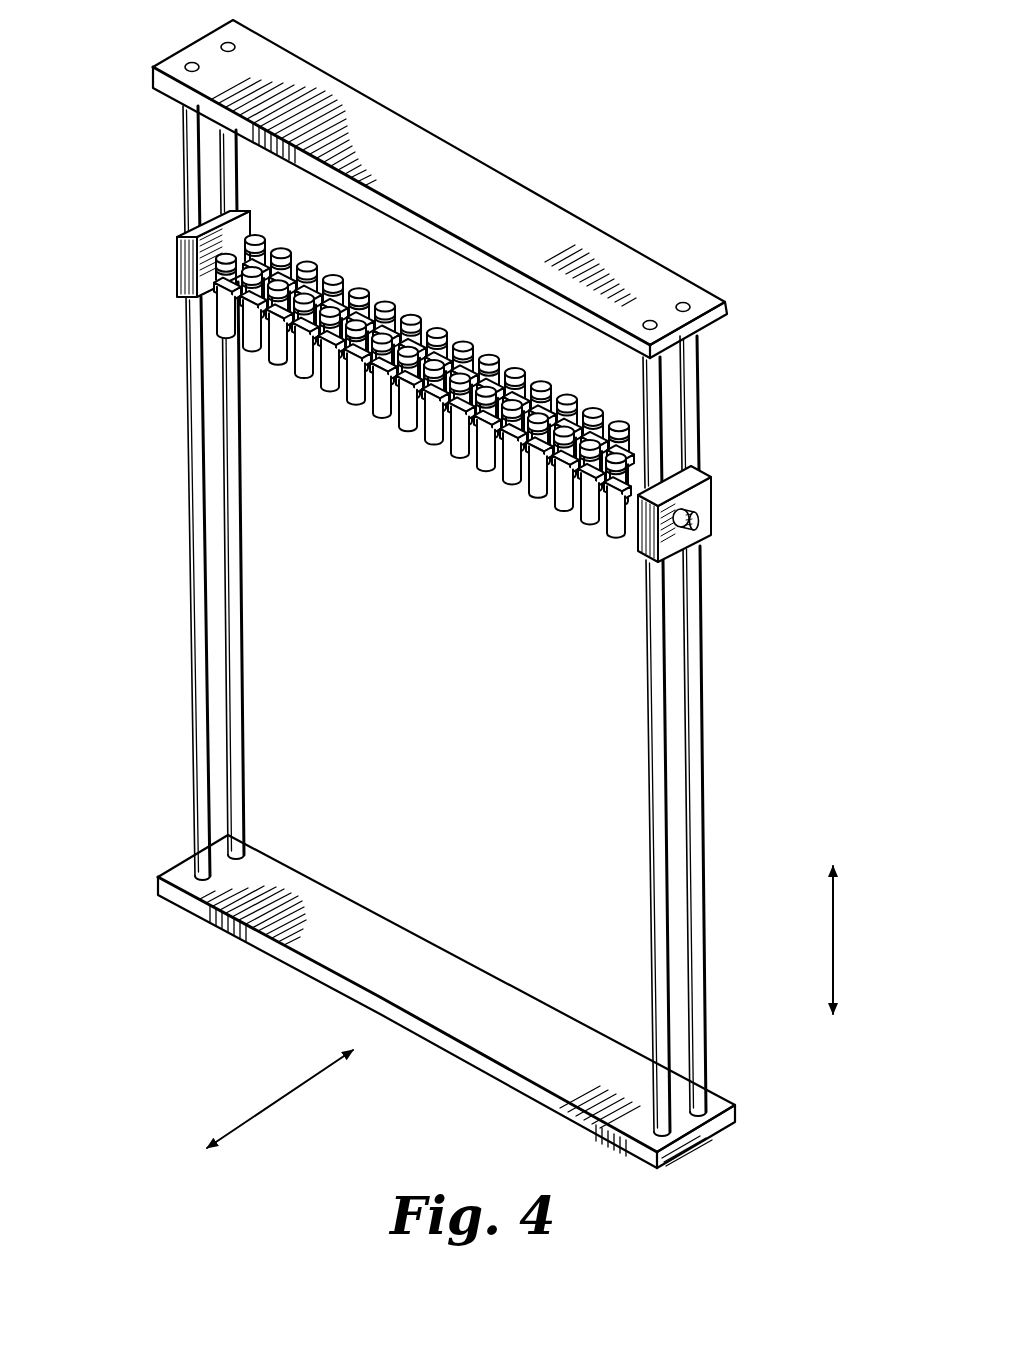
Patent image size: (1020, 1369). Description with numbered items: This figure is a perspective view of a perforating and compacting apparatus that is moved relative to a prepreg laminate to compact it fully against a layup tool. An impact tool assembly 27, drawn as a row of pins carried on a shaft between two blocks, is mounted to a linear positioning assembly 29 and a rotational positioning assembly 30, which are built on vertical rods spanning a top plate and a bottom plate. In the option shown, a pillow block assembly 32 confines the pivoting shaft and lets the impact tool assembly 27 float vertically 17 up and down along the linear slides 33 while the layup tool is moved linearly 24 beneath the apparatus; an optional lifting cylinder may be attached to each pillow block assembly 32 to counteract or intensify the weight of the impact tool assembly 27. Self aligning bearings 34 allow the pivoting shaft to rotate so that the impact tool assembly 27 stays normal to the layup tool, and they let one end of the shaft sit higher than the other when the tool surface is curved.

The vertical float direction 17 is at (832, 918).
The linear movement direction of layup tool 24 is at (282, 1100).
The impact tool assembly 27 is at (402, 447).
The linear positioning assembly 29 is at (708, 680).
The rotational positioning assembly 30 is at (716, 497).
The pillow block assembly 32 is at (170, 292).
The linear slides 33 is at (186, 631).
The self aligning bearings 34 is at (447, 741).